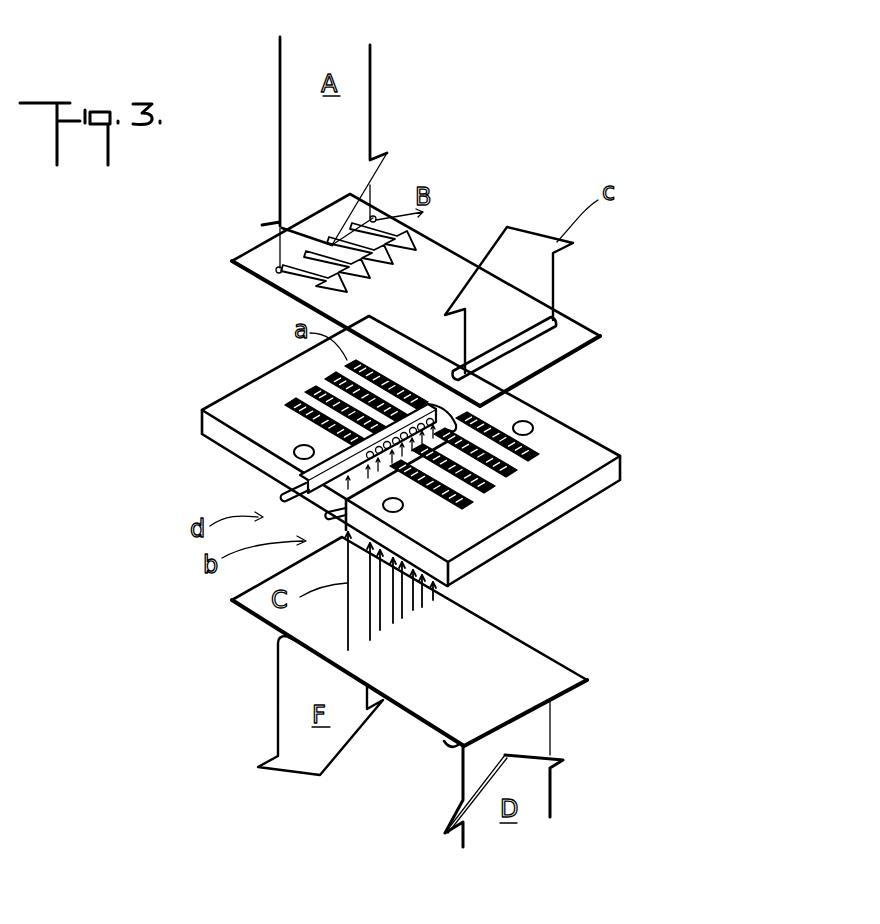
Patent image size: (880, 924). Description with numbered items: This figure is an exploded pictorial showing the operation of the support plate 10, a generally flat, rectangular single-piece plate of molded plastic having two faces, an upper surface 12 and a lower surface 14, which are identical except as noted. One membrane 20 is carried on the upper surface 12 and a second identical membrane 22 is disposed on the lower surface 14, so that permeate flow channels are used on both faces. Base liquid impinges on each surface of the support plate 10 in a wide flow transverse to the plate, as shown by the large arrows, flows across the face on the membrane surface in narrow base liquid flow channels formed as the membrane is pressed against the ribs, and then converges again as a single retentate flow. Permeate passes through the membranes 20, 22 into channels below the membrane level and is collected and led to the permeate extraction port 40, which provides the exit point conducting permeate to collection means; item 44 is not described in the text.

The support plate 10 is at (606, 429).
The upper surface 12 is at (603, 460).
The lower surface 14 is at (588, 499).
The membrane 20 is at (600, 336).
The second membrane 22 is at (580, 668).
The permeate extraction port 40 is at (345, 527).
The alignment pin 44 is at (286, 495).